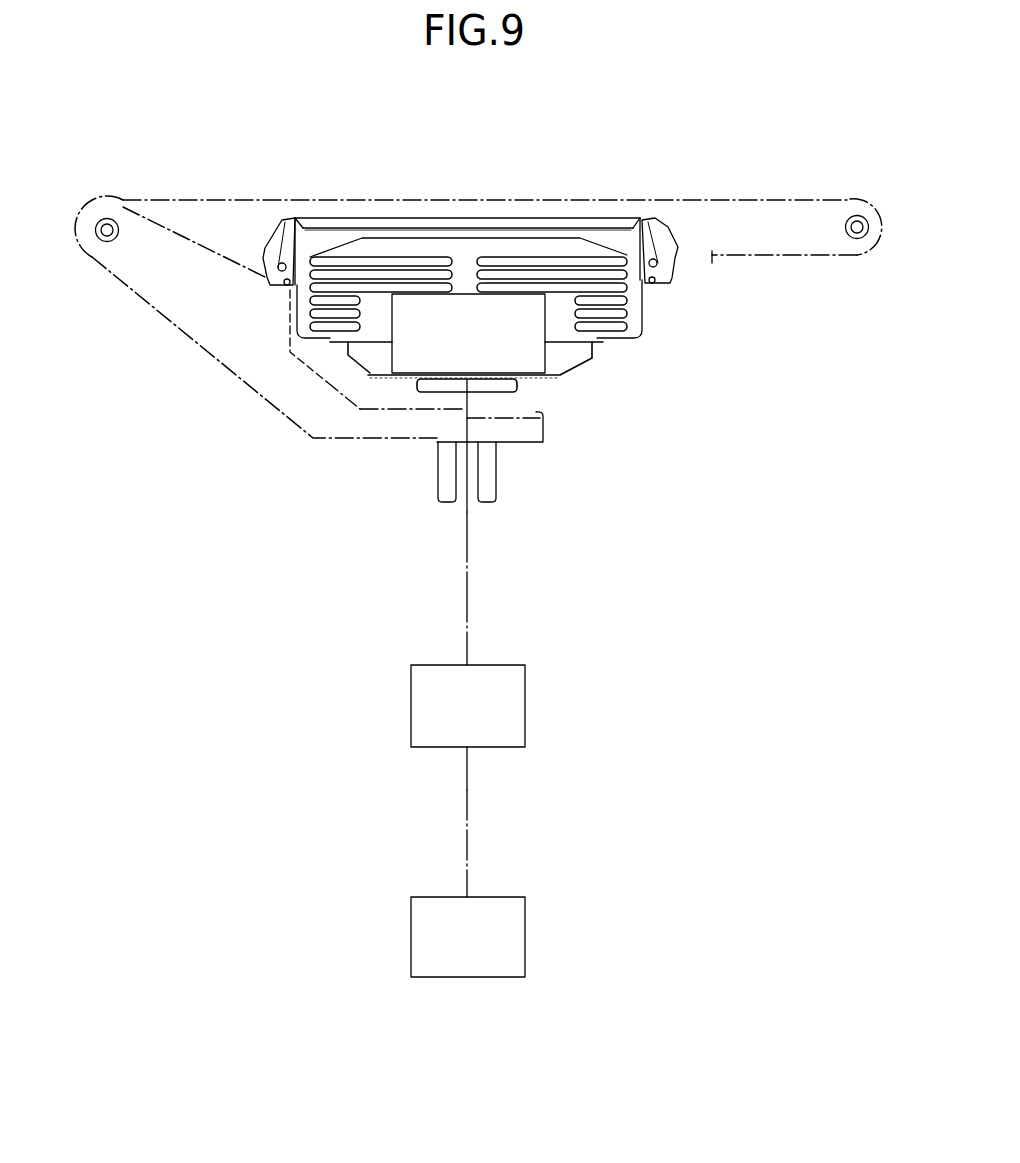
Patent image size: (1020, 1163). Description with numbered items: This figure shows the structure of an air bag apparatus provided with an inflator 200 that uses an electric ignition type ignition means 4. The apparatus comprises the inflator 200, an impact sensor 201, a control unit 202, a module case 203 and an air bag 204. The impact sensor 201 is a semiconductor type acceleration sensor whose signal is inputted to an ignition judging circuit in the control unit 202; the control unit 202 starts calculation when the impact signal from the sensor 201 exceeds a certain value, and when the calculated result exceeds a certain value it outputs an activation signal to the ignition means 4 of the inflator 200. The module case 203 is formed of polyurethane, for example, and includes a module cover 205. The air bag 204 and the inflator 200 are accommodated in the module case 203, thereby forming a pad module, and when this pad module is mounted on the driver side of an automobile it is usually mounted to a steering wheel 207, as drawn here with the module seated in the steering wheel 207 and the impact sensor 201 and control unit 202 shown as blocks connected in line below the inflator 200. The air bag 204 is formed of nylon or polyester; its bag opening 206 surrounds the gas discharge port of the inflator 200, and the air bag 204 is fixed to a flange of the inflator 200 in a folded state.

The ignition means 4 is at (453, 392).
The inflator 200 is at (362, 373).
The impact sensor 201 is at (410, 937).
The control unit 202 is at (410, 700).
The module case 203 is at (618, 213).
The air bag 204 is at (341, 243).
The module cover 205 is at (462, 217).
The bag opening 206 is at (622, 311).
The steering wheel 207 is at (742, 198).